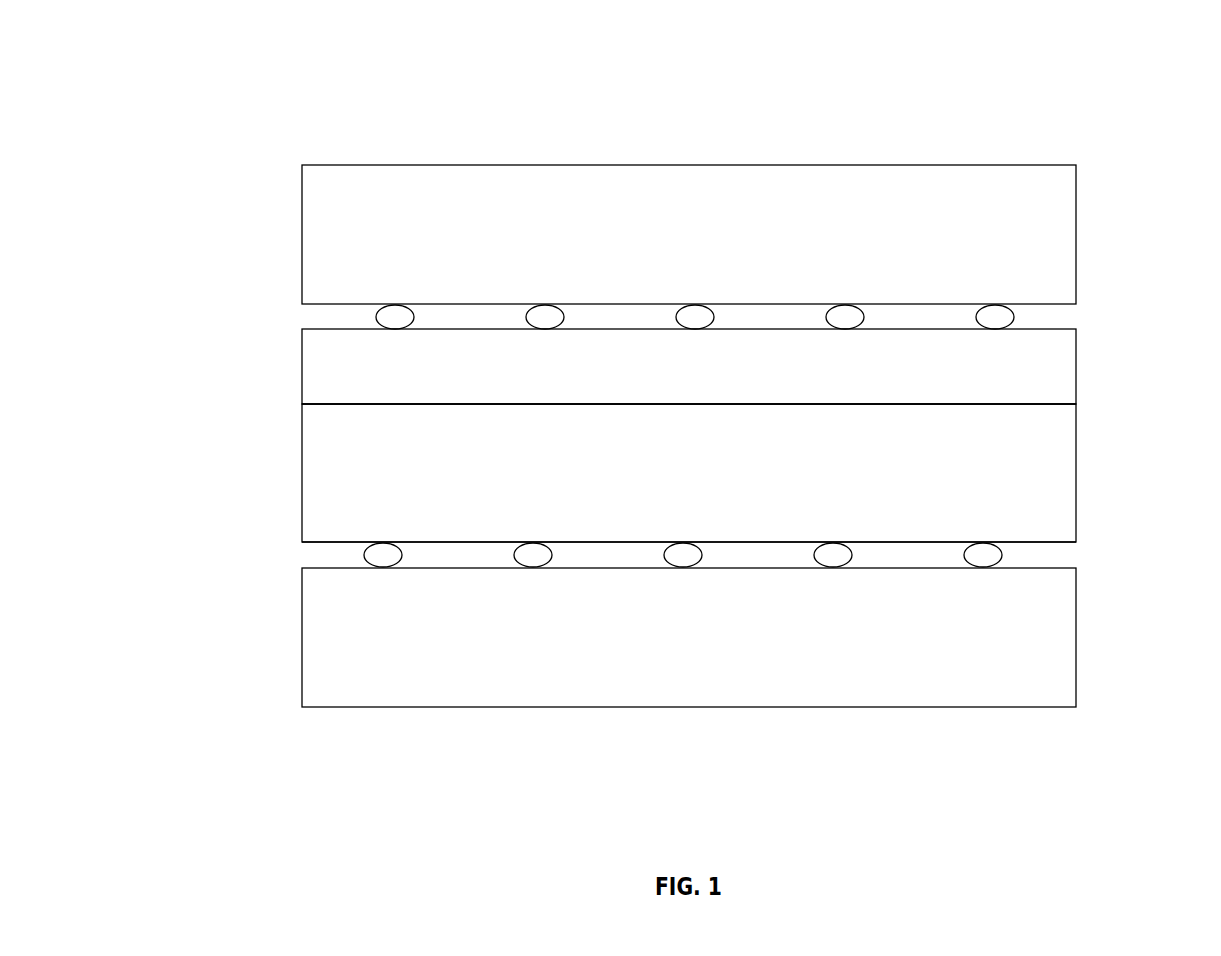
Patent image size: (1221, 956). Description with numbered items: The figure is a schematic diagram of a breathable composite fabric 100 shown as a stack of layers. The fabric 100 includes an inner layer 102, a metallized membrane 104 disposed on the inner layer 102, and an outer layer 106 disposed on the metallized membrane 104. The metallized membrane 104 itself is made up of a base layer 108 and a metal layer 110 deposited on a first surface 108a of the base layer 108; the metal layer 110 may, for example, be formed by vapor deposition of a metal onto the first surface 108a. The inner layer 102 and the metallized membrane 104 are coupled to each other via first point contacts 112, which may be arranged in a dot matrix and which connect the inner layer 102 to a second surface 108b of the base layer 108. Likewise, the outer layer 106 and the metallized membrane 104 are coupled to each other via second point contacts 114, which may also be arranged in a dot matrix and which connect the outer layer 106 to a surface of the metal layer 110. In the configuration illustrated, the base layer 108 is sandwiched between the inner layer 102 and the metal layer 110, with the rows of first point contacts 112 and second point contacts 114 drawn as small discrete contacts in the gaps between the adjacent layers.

The breathable composite fabric 100 is at (709, 70).
The inner layer 102 is at (1076, 657).
The metallized membrane 104 is at (668, 445).
The outer layer 106 is at (1076, 222).
The base layer 108 is at (1076, 473).
The first surface 108a is at (327, 403).
The second surface 108b is at (330, 543).
The metal layer 110 is at (1076, 372).
The first point contacts 112 is at (1002, 555).
The second point contacts 114 is at (1014, 313).